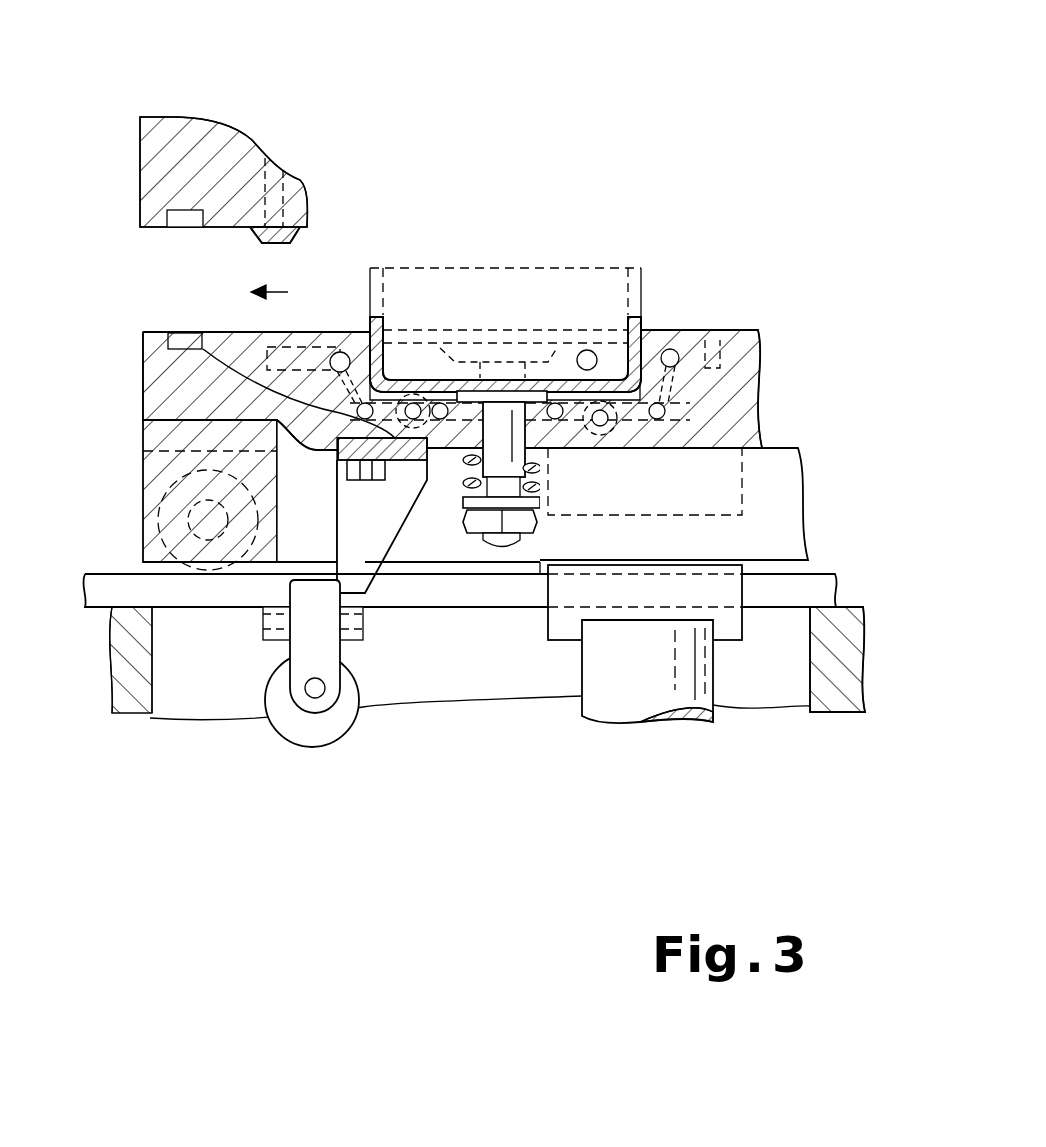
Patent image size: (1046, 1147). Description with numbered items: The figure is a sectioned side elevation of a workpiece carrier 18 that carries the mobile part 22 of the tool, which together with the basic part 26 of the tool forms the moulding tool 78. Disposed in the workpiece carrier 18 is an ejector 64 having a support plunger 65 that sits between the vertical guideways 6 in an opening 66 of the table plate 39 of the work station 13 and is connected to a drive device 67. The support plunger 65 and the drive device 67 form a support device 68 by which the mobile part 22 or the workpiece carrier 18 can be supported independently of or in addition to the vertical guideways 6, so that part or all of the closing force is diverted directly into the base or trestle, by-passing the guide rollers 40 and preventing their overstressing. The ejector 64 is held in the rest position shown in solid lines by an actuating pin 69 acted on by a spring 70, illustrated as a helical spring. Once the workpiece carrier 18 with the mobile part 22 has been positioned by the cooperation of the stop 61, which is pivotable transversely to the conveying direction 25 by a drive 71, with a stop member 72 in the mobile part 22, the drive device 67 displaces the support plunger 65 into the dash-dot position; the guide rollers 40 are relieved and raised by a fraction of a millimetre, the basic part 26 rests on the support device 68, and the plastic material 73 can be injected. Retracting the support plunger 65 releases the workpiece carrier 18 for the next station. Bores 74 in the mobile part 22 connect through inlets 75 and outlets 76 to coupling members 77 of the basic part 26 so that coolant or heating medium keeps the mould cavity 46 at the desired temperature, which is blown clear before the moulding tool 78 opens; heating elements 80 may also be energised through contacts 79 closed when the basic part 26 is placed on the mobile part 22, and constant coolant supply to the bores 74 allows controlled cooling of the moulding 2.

The moulding 2 is at (490, 432).
The vertical guideways 6 is at (803, 588).
The work station 13 is at (280, 784).
The workpiece carrier 18 is at (767, 477).
The mobile part of the tool 22 is at (763, 340).
The conveying direction 25 is at (258, 282).
The basic part of the tool 26 is at (232, 150).
The table plate 39 is at (827, 677).
The guide rollers 40 is at (167, 592).
The mould cavity 46 is at (370, 322).
The stop 61 is at (302, 588).
The ejector 64 is at (560, 388).
The support plunger 65 is at (720, 585).
The opening 66 is at (768, 652).
The drive device 67 is at (638, 700).
The support device 68 is at (553, 707).
The actuating pin 69 is at (545, 372).
The spring 70 is at (463, 482).
The drive 71 is at (335, 720).
The stop member 72 is at (350, 530).
The plastic material 73 is at (511, 266).
The bores 74 is at (664, 412).
The inlets 75 is at (289, 335).
The outlets 76 is at (718, 340).
The coupling members 77 is at (300, 243).
The moulding tool 78 is at (235, 124).
The contacts 79 is at (168, 228).
The heating elements 80 is at (525, 392).